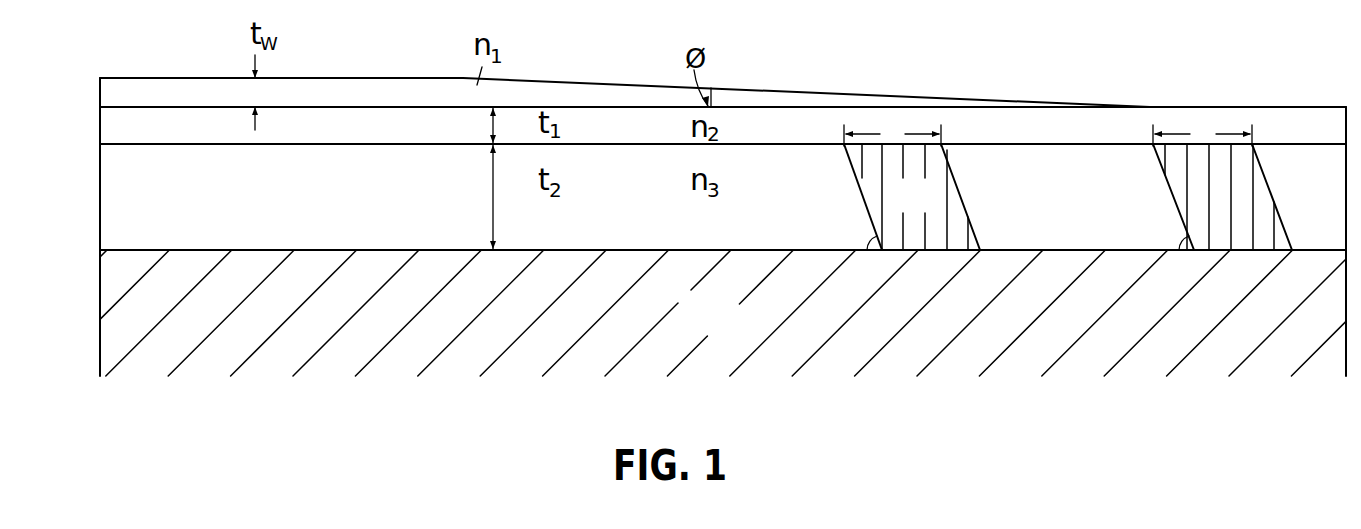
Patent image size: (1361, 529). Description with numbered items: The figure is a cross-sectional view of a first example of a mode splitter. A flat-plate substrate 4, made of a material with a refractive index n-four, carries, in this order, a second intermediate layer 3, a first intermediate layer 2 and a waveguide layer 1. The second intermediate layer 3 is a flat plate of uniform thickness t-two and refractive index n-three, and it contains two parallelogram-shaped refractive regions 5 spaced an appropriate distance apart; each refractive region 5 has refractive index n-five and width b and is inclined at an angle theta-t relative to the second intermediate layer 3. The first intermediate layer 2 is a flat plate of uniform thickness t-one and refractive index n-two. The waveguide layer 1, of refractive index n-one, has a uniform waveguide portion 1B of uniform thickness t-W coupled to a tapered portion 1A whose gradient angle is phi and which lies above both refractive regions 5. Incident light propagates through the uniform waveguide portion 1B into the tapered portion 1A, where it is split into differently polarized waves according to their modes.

The waveguide layer 1 is at (589, 60).
The tapered portion 1A is at (600, 82).
The uniform waveguide portion 1B is at (358, 78).
The first intermediate layer 2 is at (115, 133).
The second intermediate layer 3 is at (115, 196).
The substrate 4 is at (113, 307).
The refractive region 5 is at (953, 196).